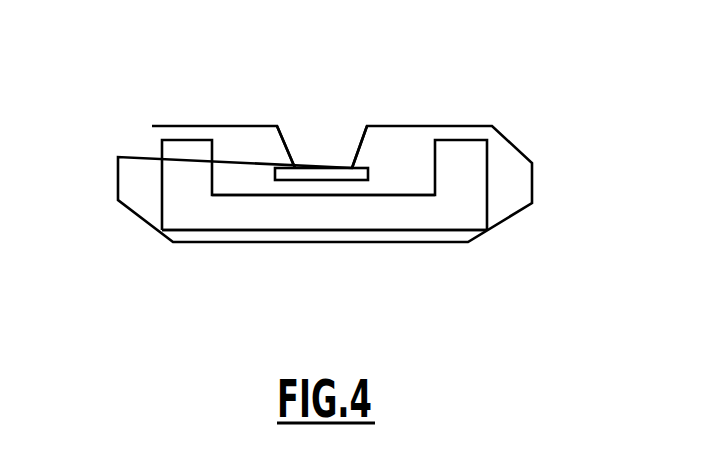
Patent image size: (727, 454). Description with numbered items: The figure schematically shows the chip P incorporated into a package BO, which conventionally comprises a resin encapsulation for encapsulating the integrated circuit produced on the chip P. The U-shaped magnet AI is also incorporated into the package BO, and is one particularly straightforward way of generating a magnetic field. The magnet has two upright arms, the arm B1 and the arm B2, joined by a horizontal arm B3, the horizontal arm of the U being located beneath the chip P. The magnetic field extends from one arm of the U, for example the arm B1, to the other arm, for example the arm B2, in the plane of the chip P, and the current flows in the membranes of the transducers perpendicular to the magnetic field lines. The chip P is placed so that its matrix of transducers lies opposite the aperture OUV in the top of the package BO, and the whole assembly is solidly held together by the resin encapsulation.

The package BO is at (502, 126).
The aperture OUV is at (328, 133).
The arm of the magnet B2 is at (188, 165).
The arm of the magnet B1 is at (472, 163).
The bottom wall B3 is at (308, 215).
The U-shaped magnet AI is at (265, 210).
The chip P is at (343, 183).